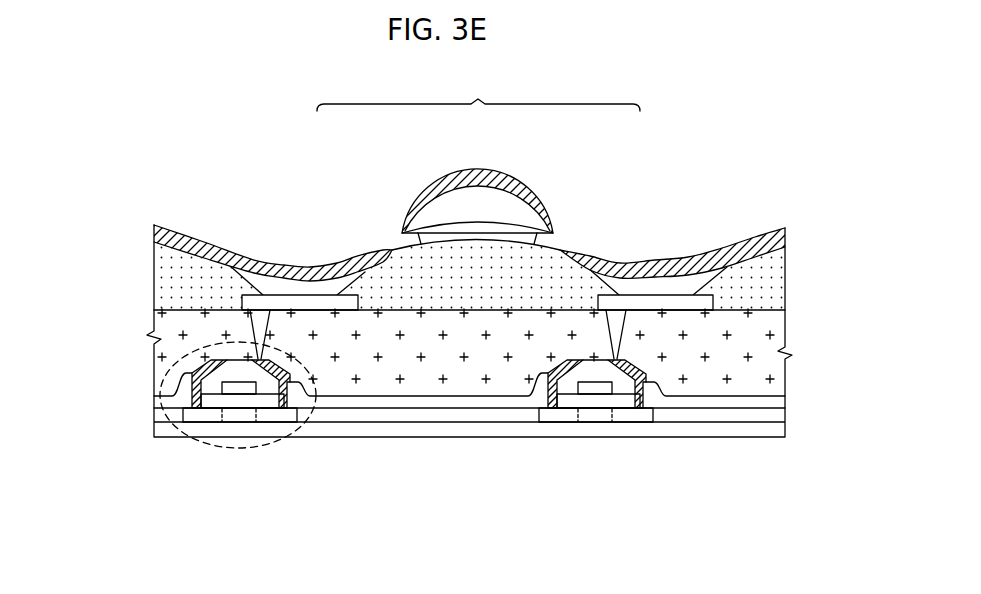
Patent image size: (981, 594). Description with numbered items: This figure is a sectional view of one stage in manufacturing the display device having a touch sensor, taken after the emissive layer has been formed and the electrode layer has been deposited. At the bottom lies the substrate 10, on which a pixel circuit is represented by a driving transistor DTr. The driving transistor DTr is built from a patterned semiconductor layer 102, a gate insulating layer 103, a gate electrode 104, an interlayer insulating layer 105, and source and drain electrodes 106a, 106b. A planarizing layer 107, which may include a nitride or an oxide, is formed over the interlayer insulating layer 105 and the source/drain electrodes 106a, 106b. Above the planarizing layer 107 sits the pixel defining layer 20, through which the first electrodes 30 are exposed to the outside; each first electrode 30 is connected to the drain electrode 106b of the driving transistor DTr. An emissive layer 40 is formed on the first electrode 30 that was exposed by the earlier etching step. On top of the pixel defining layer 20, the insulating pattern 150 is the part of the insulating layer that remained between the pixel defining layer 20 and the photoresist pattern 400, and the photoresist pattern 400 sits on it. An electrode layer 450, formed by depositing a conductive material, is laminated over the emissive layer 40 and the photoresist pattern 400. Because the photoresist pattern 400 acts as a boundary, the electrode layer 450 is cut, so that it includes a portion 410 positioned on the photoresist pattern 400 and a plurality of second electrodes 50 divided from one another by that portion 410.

The substrate 10 is at (158, 431).
The pixel defining layer 20 is at (482, 293).
The first electrode 30 is at (282, 298).
The emissive layer 40 is at (317, 290).
The second electrode 50 is at (309, 270).
The semiconductor layer 102 is at (228, 415).
The gate insulating layer 103 is at (160, 408).
The gate electrode 104 is at (242, 387).
The interlayer insulating layer 105 is at (165, 380).
The source electrode 106a is at (218, 385).
The drain electrode 106b is at (286, 395).
The planarizing layer 107 is at (158, 318).
The driving transistor DTr is at (187, 356).
The insulating pattern 150 is at (452, 233).
The photoresist pattern 400 is at (510, 207).
The portion positioned on the photoresist pattern 410 is at (474, 170).
The electrode layer 450 is at (478, 93).